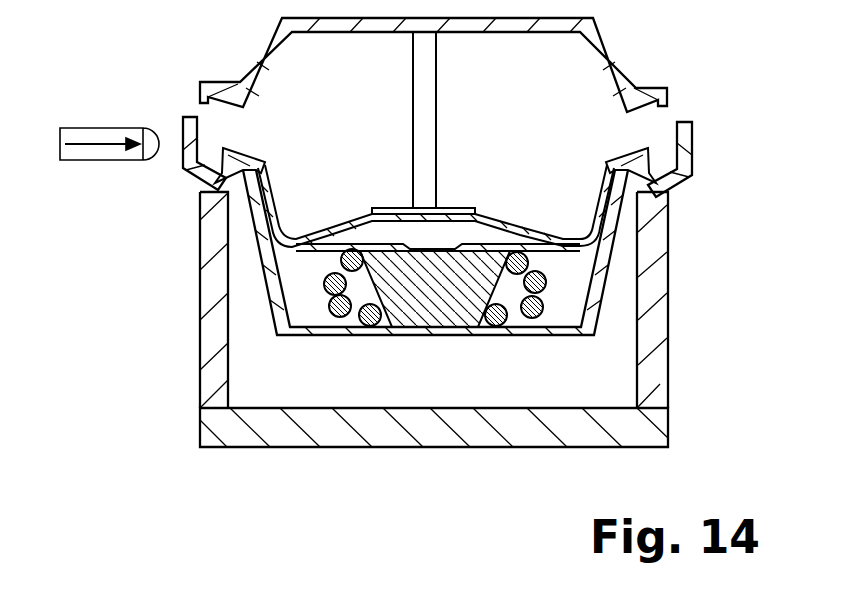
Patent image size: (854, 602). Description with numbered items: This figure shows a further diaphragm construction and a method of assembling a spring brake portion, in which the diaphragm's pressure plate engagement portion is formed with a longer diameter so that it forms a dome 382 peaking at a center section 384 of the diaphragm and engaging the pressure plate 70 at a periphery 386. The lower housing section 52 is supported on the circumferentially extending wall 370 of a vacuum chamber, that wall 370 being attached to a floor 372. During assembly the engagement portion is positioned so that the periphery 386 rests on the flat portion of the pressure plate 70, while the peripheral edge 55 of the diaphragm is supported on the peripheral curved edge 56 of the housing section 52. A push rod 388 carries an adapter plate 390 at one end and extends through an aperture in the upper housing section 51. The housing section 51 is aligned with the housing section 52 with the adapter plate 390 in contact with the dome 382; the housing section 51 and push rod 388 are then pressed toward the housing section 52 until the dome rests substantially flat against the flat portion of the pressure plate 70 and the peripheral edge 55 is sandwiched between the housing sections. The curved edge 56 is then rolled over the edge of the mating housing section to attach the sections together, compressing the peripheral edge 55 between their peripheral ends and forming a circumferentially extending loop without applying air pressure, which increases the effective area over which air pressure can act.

The housing section 51 is at (250, 62).
The peripheral curved edge 56 is at (185, 115).
The peripheral edge 55 is at (220, 168).
The housing section 52 is at (265, 287).
The push rod 388 is at (418, 106).
The adapter plate 390 is at (400, 208).
The center section 384 is at (450, 220).
The dome 382 is at (500, 217).
The periphery 386 is at (458, 314).
The pressure plate 70 is at (337, 317).
The wall 370 is at (668, 328).
The floor 372 is at (540, 447).